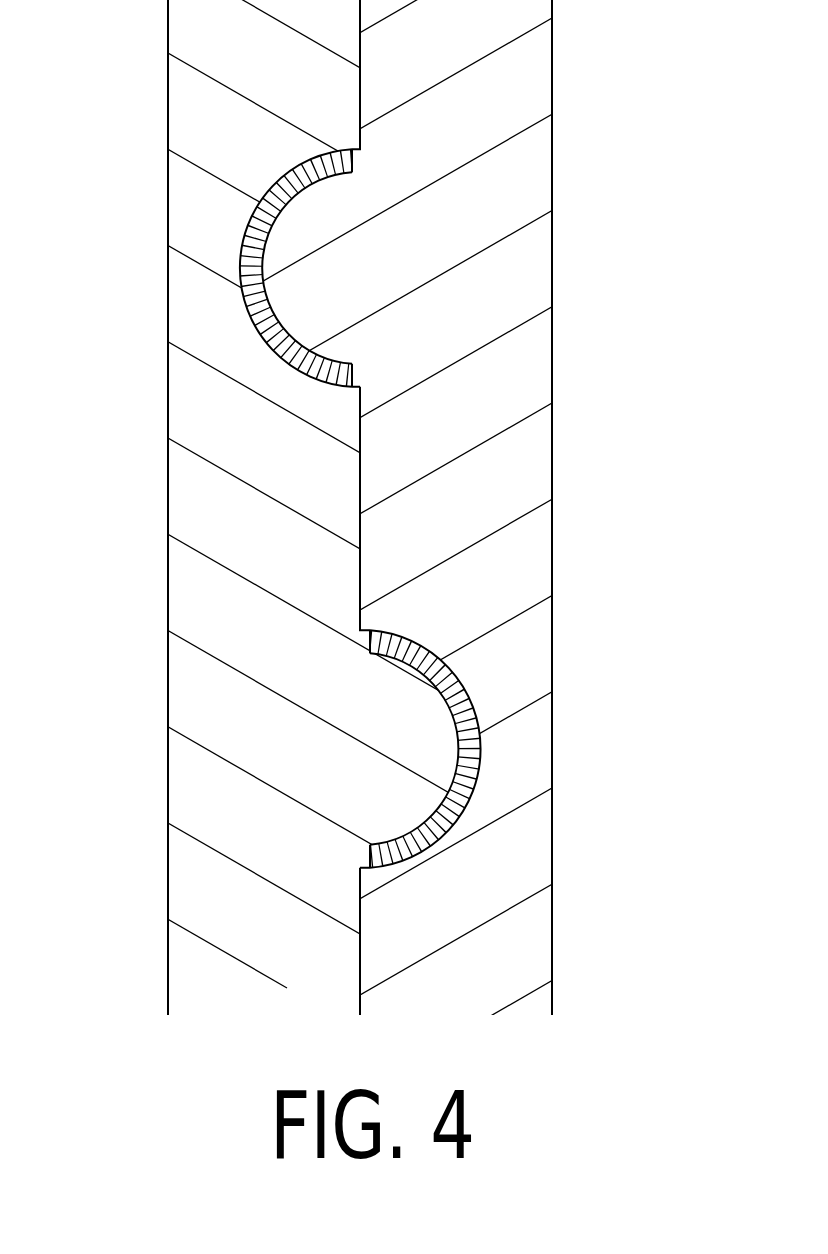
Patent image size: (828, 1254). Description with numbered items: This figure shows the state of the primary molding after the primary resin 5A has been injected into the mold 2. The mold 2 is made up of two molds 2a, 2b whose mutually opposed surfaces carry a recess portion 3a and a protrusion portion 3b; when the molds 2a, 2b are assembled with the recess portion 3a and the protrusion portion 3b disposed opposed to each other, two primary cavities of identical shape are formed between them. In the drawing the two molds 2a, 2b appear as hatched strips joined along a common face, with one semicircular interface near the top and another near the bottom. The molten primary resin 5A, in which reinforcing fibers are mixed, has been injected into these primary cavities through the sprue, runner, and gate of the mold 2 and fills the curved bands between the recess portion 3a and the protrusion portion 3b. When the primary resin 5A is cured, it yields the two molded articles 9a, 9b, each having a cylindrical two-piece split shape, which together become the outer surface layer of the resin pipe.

The mold 2 is at (372, 601).
The mold 2a is at (183, 507).
The mold 2b is at (533, 380).
The recess portion 3a is at (302, 183).
The protrusion portion 3b is at (297, 323).
The primary resin 5A is at (360, 508).
The molded article 9a is at (262, 258).
The molded article 9b is at (463, 716).